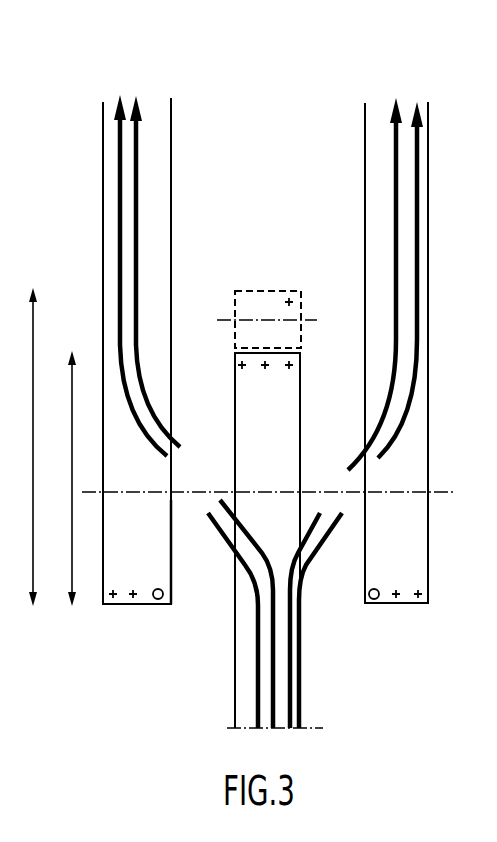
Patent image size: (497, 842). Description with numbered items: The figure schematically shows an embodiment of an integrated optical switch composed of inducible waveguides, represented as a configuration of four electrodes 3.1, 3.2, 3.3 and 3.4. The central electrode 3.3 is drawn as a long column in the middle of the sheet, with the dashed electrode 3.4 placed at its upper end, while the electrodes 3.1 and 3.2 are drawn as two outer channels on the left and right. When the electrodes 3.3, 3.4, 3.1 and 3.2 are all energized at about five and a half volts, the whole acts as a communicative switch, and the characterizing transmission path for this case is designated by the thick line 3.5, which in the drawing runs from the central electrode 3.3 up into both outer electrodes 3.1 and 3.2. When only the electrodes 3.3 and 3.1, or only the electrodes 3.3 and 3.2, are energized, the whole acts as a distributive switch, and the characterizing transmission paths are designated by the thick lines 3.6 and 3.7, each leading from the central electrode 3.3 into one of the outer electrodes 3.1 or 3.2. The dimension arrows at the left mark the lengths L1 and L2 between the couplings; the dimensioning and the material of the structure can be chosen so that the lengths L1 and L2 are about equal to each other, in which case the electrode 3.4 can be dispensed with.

The electrode 3.1 is at (106, 173).
The electrode 3.2 is at (377, 394).
The electrode 3.3 is at (240, 390).
The electrode 3.4 is at (241, 303).
The transmission path 3.5 is at (136, 96).
The transmission path 3.6 is at (120, 96).
The transmission path 3.7 is at (417, 100).
The length L1 is at (64, 478).
The length L2 is at (23, 447).